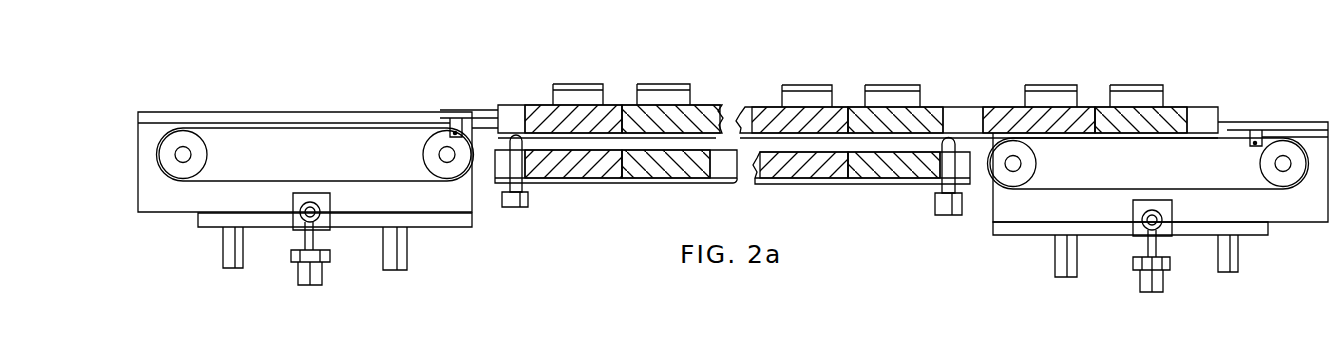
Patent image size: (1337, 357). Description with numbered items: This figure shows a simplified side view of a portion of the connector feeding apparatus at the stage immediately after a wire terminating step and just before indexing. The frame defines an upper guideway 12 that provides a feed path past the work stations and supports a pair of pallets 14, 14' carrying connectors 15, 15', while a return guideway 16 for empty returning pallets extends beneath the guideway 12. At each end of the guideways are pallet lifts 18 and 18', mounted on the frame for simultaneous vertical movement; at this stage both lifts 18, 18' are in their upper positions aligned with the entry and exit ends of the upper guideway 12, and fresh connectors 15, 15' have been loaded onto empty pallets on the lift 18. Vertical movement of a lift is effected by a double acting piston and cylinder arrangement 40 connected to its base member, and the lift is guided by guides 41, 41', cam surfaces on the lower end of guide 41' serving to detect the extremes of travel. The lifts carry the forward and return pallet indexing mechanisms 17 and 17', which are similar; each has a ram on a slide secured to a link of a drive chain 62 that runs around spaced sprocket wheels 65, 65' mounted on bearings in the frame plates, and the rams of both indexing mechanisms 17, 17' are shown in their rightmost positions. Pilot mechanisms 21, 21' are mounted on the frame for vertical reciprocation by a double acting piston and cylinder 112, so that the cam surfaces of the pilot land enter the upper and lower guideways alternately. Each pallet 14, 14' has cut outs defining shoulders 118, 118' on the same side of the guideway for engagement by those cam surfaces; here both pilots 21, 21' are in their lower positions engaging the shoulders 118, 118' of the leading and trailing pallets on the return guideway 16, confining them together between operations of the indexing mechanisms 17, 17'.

The guideway 12 is at (763, 120).
The pallet 14 is at (879, 82).
The pallet 14' is at (1057, 88).
The connector 15 is at (872, 73).
The connector 15' is at (1051, 72).
The return guideway 16 is at (770, 184).
The forward pallet indexing mechanism 17 is at (1158, 157).
The return pallet indexing mechanism 17' is at (318, 128).
The pallet lift 18 is at (1147, 264).
The pallet lift 18' is at (310, 255).
The pilot mechanism 21 is at (942, 171).
The pilot mechanism 21' is at (535, 153).
The double acting piston and cylinder arrangement 40 is at (1167, 275).
The guide 41 is at (1246, 282).
The guide 41' is at (1038, 271).
The drive chain 62 is at (1121, 188).
The sprocket wheel 65 is at (1290, 200).
The sprocket wheel 65' is at (1042, 164).
The double acting piston and cylinder 112 is at (945, 219).
The shoulder 118 is at (917, 203).
The shoulder 118' is at (549, 216).